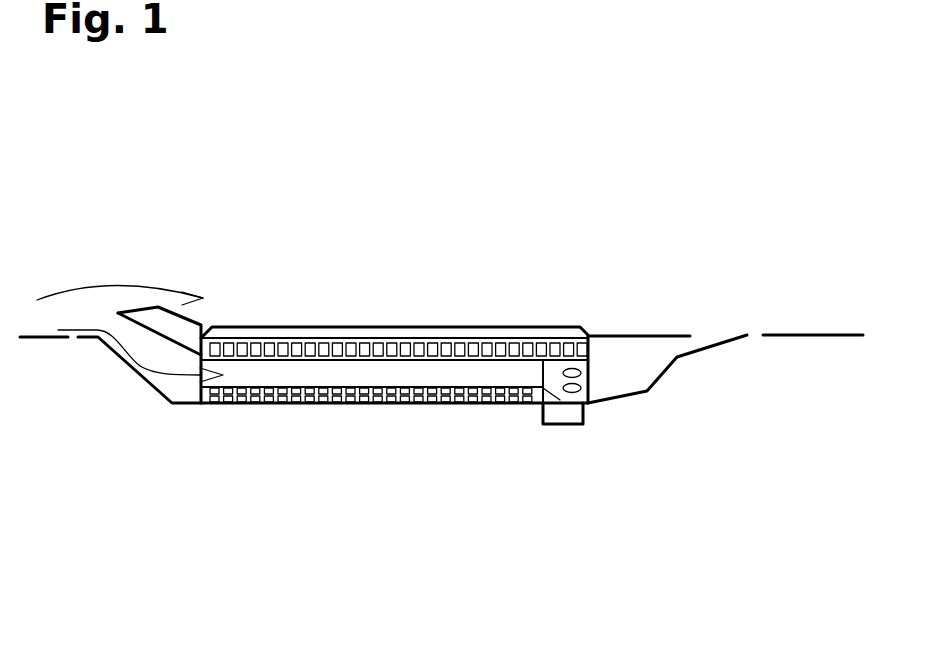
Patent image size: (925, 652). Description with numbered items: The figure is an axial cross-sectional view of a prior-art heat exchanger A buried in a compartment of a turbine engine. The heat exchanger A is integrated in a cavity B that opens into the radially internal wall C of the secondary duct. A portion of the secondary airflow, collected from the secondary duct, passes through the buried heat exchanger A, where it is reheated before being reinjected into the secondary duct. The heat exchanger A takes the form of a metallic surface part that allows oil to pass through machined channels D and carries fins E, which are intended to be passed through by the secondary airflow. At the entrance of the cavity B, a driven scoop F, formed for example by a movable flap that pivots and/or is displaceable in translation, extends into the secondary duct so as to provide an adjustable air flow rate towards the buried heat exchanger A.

The heat exchanger A is at (642, 323).
The cavity B is at (620, 373).
The radially internal wall of the secondary duct C is at (813, 335).
The machined channels D is at (398, 348).
The fins E is at (545, 376).
The driven scoop F is at (177, 325).